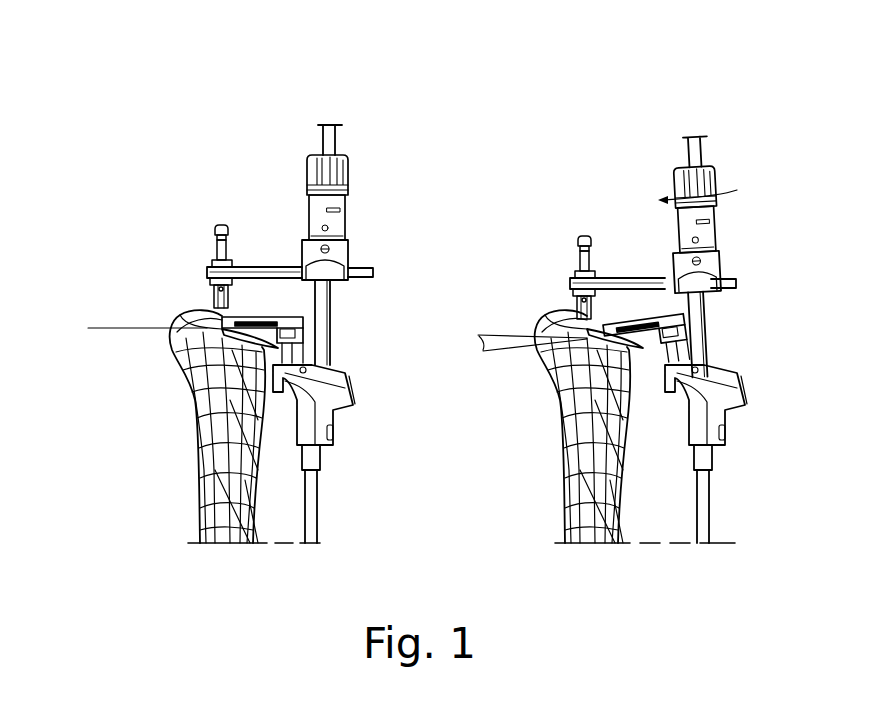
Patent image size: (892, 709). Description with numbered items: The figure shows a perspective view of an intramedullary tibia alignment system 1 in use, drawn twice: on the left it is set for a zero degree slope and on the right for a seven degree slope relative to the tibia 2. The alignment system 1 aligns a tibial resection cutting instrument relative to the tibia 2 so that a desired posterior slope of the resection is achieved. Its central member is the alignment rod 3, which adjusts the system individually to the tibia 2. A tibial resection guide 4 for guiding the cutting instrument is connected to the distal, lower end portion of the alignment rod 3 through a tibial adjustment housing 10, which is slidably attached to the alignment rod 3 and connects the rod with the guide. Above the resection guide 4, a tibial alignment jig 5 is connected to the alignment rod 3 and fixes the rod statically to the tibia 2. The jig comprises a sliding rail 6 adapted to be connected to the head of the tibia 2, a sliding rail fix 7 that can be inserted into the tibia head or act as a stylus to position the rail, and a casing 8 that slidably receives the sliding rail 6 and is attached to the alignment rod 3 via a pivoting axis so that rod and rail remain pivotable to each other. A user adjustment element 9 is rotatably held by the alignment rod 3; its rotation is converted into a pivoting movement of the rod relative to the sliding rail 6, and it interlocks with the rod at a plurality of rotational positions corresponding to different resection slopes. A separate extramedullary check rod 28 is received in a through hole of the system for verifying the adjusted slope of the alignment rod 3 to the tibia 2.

The intramedullary tibia alignment system 1 is at (166, 123).
The tibia 2 is at (196, 414).
The alignment rod 3 is at (330, 330).
The tibial resection guide 4 is at (300, 306).
The tibial alignment jig 5 is at (362, 166).
The sliding rail 6 is at (270, 266).
The sliding rail fix 7 is at (221, 224).
The casing 8 is at (340, 251).
The user adjustment element 9 is at (346, 184).
The tibial adjustment housing 10 is at (335, 388).
The extramedullary check rod 28 is at (712, 505).